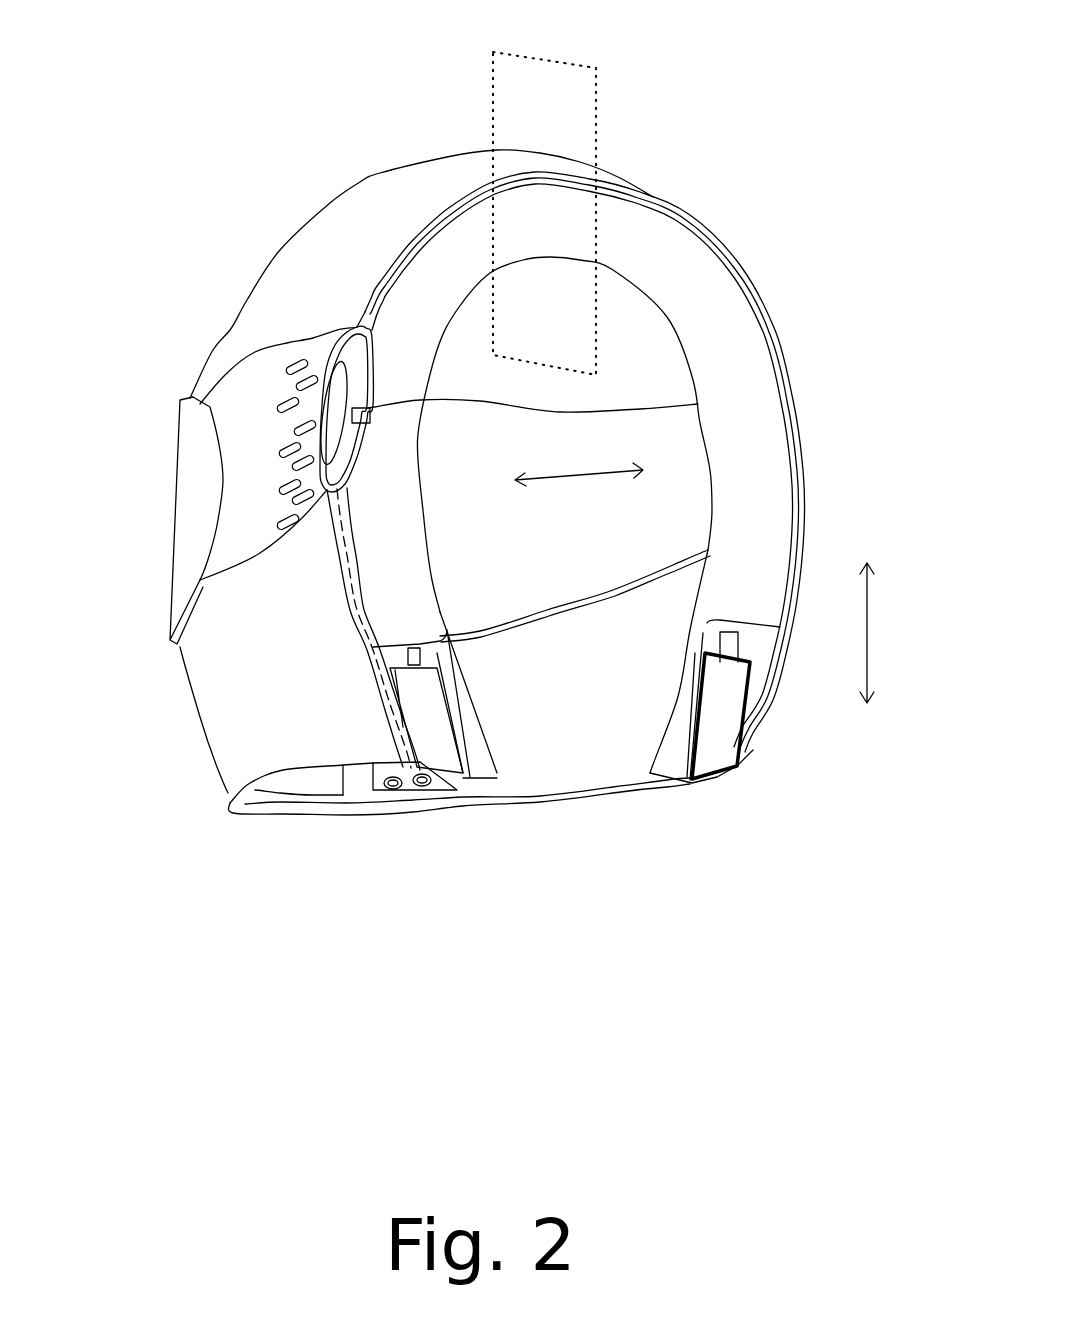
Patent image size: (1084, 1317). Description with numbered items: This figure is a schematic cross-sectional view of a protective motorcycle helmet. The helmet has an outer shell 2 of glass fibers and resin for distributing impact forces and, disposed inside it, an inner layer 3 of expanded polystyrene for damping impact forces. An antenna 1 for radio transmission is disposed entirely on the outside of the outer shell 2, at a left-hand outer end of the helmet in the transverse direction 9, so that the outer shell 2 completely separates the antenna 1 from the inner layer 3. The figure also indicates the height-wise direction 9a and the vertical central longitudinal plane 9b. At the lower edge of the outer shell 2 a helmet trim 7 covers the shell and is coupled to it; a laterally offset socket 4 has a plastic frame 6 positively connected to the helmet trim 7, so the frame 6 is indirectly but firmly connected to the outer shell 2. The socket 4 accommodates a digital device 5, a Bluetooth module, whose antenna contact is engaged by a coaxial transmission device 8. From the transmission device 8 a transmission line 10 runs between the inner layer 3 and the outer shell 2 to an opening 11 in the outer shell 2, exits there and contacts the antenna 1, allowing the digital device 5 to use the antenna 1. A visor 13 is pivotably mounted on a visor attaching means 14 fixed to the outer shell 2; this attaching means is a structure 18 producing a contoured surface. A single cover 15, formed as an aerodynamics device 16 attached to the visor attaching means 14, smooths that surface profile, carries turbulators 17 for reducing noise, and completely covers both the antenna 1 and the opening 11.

The antenna 1 is at (332, 468).
The outer shell 2 is at (390, 197).
The inner layer 3 is at (743, 393).
The socket 4 is at (395, 843).
The digital device 5 is at (450, 772).
The frame 6 is at (470, 760).
The helmet trim 7 is at (263, 803).
The transmission device 8 is at (413, 640).
The transverse direction 9 is at (580, 475).
The height-wise direction 9a is at (867, 630).
The vertical central longitudinal plane 9b is at (596, 102).
The transmission line 10 is at (357, 573).
The opening 11 is at (377, 410).
The visor 13 is at (188, 528).
The visor attaching means 14 is at (325, 370).
The cover 15 is at (270, 375).
The aerodynamics device 16 is at (270, 375).
The turbulators 17 is at (278, 527).
The structure 18 is at (325, 370).